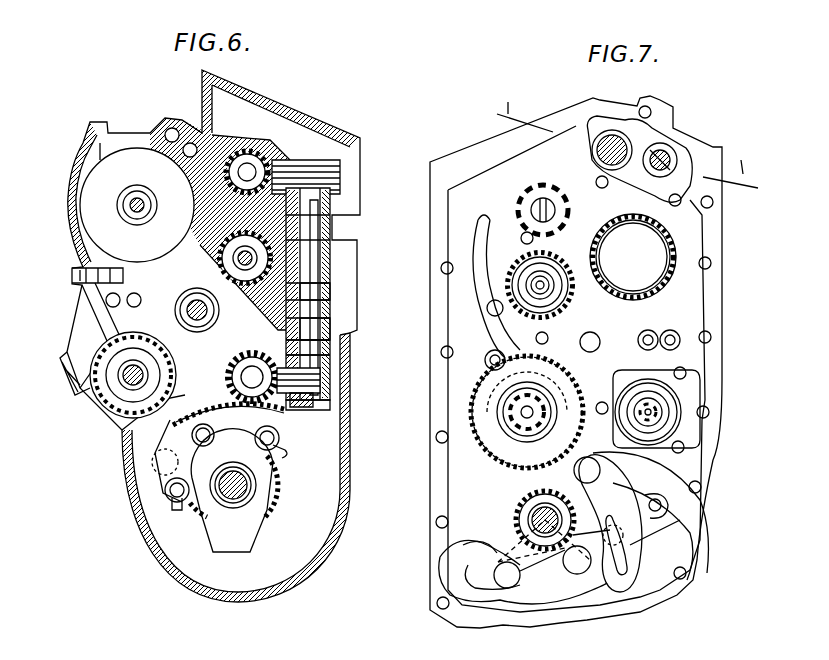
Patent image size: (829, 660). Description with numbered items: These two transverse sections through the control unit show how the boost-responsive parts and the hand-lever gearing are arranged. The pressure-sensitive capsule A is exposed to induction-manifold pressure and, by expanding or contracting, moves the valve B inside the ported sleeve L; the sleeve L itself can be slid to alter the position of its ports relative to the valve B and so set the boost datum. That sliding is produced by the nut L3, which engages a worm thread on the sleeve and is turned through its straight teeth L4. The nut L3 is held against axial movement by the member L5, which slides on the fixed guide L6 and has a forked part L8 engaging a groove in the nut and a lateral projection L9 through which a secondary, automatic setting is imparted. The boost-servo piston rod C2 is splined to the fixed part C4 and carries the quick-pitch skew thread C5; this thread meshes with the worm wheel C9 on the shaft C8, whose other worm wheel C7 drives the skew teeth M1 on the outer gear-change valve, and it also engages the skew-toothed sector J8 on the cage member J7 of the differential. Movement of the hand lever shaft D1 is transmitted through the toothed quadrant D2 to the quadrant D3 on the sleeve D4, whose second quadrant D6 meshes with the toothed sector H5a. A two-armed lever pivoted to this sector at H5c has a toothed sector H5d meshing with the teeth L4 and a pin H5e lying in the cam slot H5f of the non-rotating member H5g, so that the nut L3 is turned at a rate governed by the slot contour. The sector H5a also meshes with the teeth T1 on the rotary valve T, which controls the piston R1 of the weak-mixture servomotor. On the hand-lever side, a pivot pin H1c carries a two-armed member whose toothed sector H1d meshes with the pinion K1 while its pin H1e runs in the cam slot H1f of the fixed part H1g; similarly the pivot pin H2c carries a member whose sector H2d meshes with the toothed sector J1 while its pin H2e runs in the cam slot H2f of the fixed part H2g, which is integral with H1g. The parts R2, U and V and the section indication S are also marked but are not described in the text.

In FIG. 6, the pressure-sensitive capsule A is at (138, 172).
In FIG. 6, the skew gear teeth M1 is at (255, 157).
In FIG. 6, the worm wheel C7 is at (300, 166).
In FIG. 6, the nut L3 is at (258, 243).
In FIG. 7, the nut L3 is at (530, 280).
In FIG. 6, the ported sleeve L is at (292, 252).
In FIG. 6, the valve B is at (252, 258).
In FIG. 6, the shaft C8 is at (302, 288).
In FIG. 6, the forked part L8 is at (230, 300).
In FIG. 6, the sliding member L5 is at (210, 323).
In FIG. 6, the fixed bar or guide L6 is at (240, 335).
In FIG. 6, the lateral projection L9 is at (280, 357).
In FIG. 6, the fixed part C4 is at (258, 378).
In FIG. 6, the worm wheel C9 is at (318, 385).
In FIG. 6, the quick-pitch thread C5 is at (308, 402).
In FIG. 6, the hollow piston rod C2 is at (308, 418).
In FIG. 6, the piston R1 is at (140, 362).
In FIG. 6, the roller shaft R2 is at (130, 368).
In FIG. 7, the roller shaft R2 is at (652, 406).
In FIG. 6, the extension sector with skew teeth J8 is at (187, 430).
In FIG. 6, the cage member J7 is at (230, 557).
In FIG. 6, the hand lever shaft D1 is at (247, 492).
In FIG. 7, the hand lever shaft D1 is at (537, 513).
In FIG. 7, the shaft U is at (605, 140).
In FIG. 7, the shaft V is at (673, 150).
In FIG. 7, the teeth T1 is at (655, 215).
In FIG. 7, the rotary valve T is at (672, 257).
In FIG. 7, the section line S is at (624, 153).
In FIG. 7, the straight teeth L4 is at (568, 277).
In FIG. 7, the toothed member H5a is at (593, 303).
In FIG. 7, the cam slot member H5g is at (503, 242).
In FIG. 7, the cam slot H5f is at (482, 243).
In FIG. 7, the pivot H5c is at (495, 303).
In FIG. 7, the toothed sector H5d is at (513, 317).
In FIG. 7, the pin H5e is at (493, 358).
In FIG. 7, the second toothed quadrant D6 is at (543, 362).
In FIG. 7, the sleeve D4 is at (533, 373).
In FIG. 7, the toothed quadrant D3 is at (470, 425).
In FIG. 7, the toothed quadrant D2 is at (508, 478).
In FIG. 7, the pinion K1 is at (520, 503).
In FIG. 7, the toothed sector H1d is at (497, 533).
In FIG. 7, the cam slot H1f is at (473, 560).
In FIG. 7, the pivot pin H1c is at (507, 576).
In FIG. 7, the fixed part H1g is at (545, 582).
In FIG. 7, the pin H1e is at (577, 563).
In FIG. 7, the pin H2e is at (590, 468).
In FIG. 7, the fixed part H2g is at (625, 480).
In FIG. 7, the toothed sector H2d is at (662, 505).
In FIG. 7, the pivot pin H2c is at (575, 535).
In FIG. 7, the toothed sector J1 is at (615, 536).
In FIG. 7, the cam slot H2f is at (625, 566).